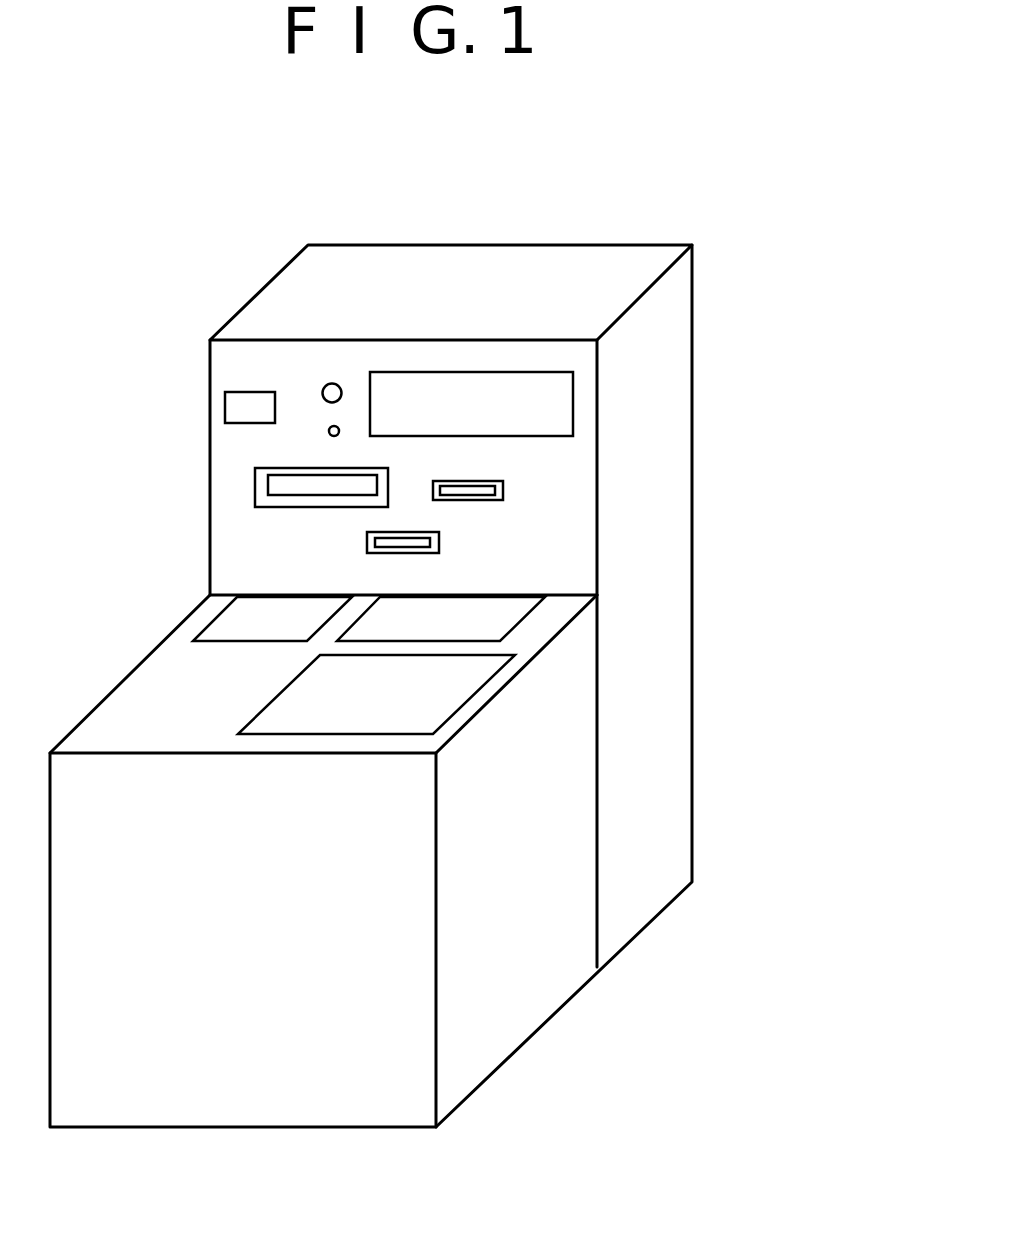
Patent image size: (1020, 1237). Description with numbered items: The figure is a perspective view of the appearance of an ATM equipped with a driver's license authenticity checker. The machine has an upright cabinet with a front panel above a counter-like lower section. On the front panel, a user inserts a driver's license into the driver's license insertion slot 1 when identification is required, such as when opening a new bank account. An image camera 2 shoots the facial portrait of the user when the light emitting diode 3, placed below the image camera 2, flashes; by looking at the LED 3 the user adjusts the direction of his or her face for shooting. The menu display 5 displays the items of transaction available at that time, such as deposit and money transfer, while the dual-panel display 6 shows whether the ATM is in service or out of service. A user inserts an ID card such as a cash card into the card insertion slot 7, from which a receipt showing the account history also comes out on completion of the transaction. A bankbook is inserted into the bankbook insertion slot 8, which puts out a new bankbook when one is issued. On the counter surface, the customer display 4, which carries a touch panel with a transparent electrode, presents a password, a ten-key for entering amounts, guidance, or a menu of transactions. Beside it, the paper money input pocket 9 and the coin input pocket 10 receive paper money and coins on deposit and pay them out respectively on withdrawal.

The driver's license insertion slot 1 is at (439, 543).
The image camera 2 is at (332, 383).
The light emitting diode 3 is at (337, 426).
The customer display 4 is at (428, 684).
The menu display 5 is at (558, 398).
The dual-panel display 6 is at (225, 403).
The card insertion slot 7 is at (500, 490).
The bankbook insertion slot 8 is at (300, 468).
The paper money input pocket 9 is at (488, 618).
The coin input pocket 10 is at (240, 620).